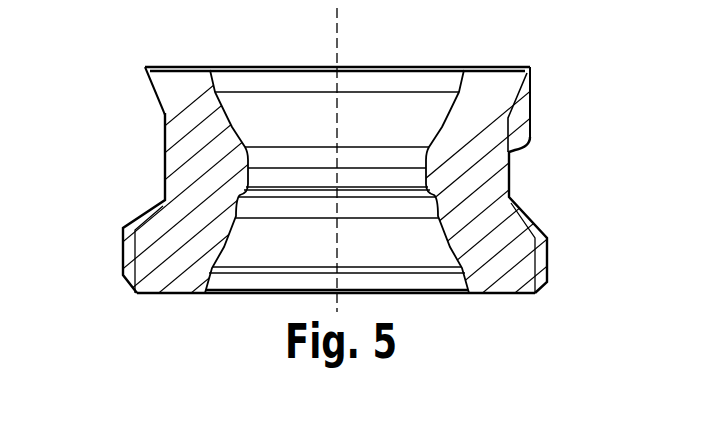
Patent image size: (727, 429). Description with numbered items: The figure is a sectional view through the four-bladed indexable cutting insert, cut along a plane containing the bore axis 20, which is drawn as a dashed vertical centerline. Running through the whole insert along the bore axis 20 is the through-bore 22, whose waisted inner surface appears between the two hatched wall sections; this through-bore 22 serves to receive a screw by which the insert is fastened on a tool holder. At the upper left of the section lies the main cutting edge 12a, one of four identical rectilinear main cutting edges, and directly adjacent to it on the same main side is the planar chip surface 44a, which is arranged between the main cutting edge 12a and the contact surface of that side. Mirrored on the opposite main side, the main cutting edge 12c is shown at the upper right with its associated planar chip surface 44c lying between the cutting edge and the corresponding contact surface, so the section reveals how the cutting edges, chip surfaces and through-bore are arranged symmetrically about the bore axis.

The main cutting edge 12a is at (143, 69).
The chip surface 44a is at (158, 106).
The main cutting edge 12c is at (532, 69).
The chip surface 44c is at (530, 105).
The bore axis 20 is at (336, 42).
The through-bore 22 is at (440, 128).